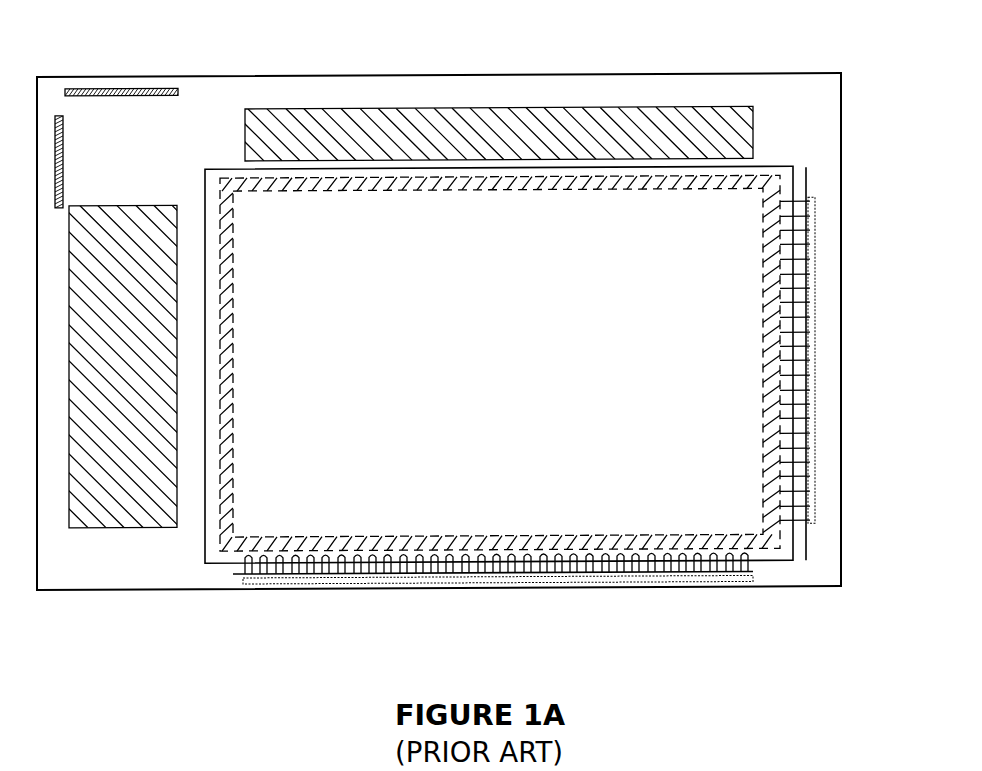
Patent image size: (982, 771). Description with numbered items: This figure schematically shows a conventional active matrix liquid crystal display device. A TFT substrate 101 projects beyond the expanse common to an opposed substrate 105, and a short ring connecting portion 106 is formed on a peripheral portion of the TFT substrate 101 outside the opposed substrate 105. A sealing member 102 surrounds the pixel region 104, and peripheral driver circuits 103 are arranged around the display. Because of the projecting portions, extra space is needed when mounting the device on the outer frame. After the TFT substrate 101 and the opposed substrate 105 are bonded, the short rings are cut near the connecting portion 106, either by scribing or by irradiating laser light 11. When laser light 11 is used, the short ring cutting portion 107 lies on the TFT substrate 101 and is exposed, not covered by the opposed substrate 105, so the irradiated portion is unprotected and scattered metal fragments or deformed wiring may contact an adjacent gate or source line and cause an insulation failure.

The TFT substrate 101 is at (208, 101).
The sealing member 102 is at (435, 187).
The peripheral driver circuits 103 is at (372, 108).
The pixel region 104 is at (520, 365).
The opposed substrate 105 is at (547, 172).
The short ring connecting portion 106 is at (805, 199).
The short ring cutting portion 107 is at (807, 199).
The laser light 11 is at (812, 550).